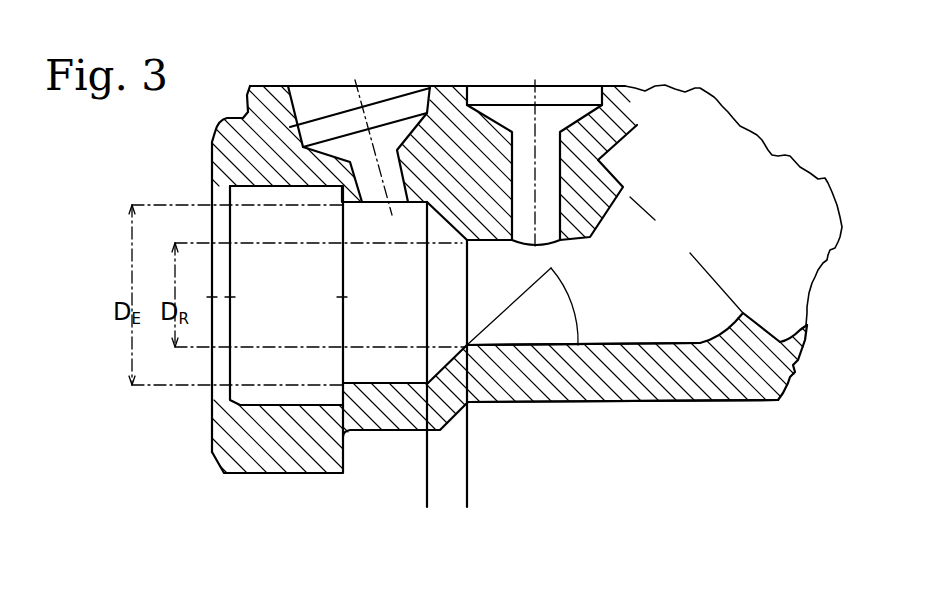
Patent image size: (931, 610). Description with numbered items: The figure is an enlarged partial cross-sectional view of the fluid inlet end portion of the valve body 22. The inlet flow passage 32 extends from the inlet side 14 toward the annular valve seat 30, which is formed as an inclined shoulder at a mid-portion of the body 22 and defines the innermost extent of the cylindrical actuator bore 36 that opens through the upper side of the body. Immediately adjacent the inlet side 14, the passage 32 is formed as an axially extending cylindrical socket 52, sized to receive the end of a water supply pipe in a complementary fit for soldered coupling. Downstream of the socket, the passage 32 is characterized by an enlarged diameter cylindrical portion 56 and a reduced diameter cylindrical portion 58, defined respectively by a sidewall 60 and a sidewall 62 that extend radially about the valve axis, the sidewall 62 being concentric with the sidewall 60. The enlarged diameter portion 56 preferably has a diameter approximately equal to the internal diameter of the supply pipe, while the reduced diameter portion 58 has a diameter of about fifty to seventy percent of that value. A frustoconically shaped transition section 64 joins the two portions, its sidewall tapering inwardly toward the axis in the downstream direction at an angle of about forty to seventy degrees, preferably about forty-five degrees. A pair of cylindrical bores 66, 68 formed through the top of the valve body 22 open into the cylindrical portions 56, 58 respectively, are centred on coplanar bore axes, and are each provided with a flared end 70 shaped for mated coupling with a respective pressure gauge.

The inlet side 14 is at (208, 447).
The valve body 22 is at (273, 450).
The annular valve seat 30 is at (625, 165).
The upstream inlet flow passage 32 is at (402, 343).
The cylindrical actuator bore 36 is at (728, 239).
The cylindrical socket 52 is at (240, 395).
The enlarged diameter cylindrical portion 56 is at (383, 367).
The reduced diameter cylindrical portion 58 is at (587, 337).
The sidewall 60 is at (403, 370).
The sidewall 62 is at (508, 337).
The frustoconically shaped transition section 64 is at (440, 115).
The cylindrical bore 66 is at (396, 168).
The cylindrical bore 68 is at (548, 153).
The flared end 70 is at (310, 100).